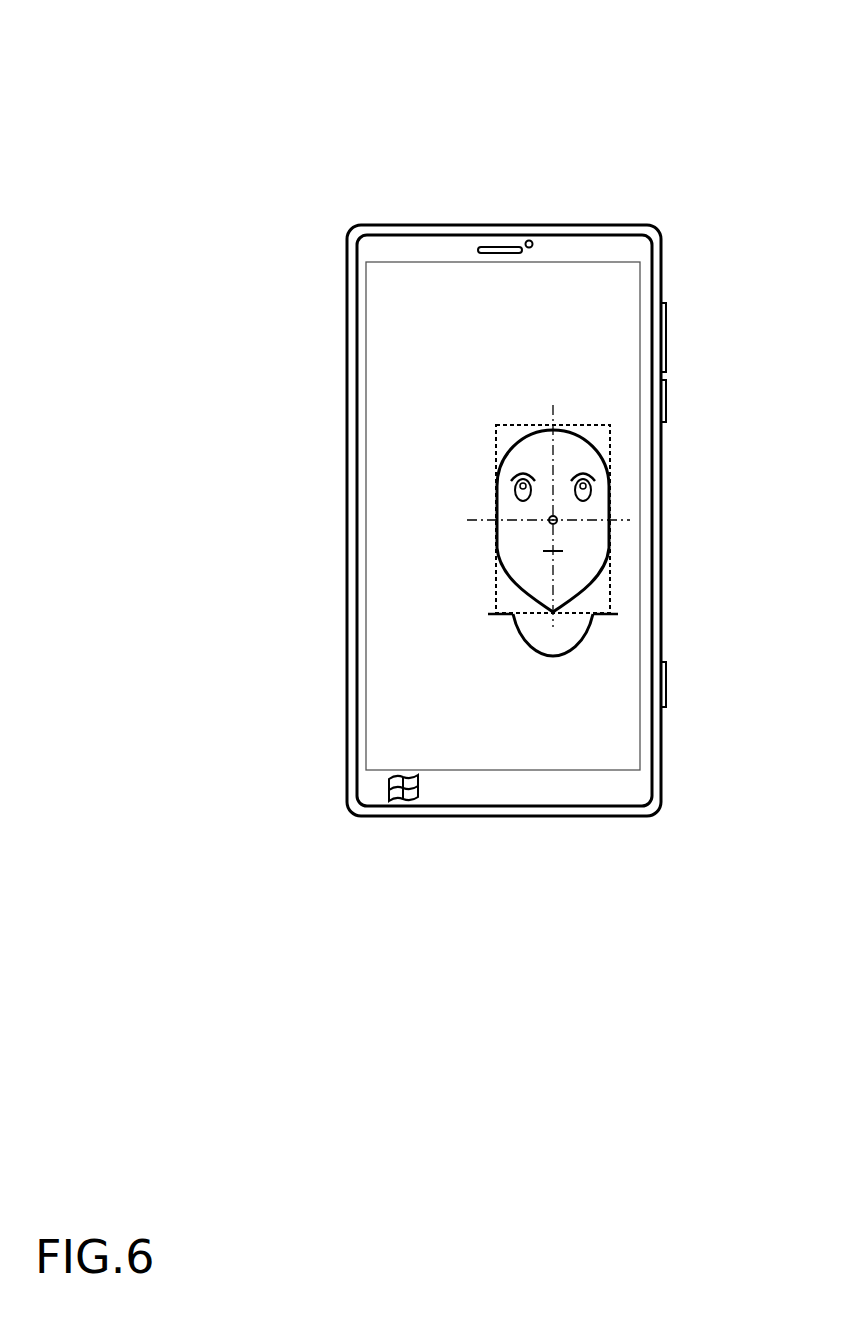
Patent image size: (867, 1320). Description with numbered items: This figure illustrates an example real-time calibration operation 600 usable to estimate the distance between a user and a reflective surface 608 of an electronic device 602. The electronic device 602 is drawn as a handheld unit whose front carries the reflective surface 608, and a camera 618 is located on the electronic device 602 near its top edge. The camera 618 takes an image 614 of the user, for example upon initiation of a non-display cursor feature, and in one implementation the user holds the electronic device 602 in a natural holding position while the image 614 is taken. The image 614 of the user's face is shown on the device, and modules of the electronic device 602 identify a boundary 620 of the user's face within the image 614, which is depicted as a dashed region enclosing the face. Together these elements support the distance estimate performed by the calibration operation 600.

The real-time calibration operation 600 is at (291, 99).
The electronic device 602 is at (661, 247).
The reflective surface 608 is at (652, 300).
The image 614 is at (610, 448).
The camera 618 is at (533, 241).
The boundary 620 is at (585, 293).